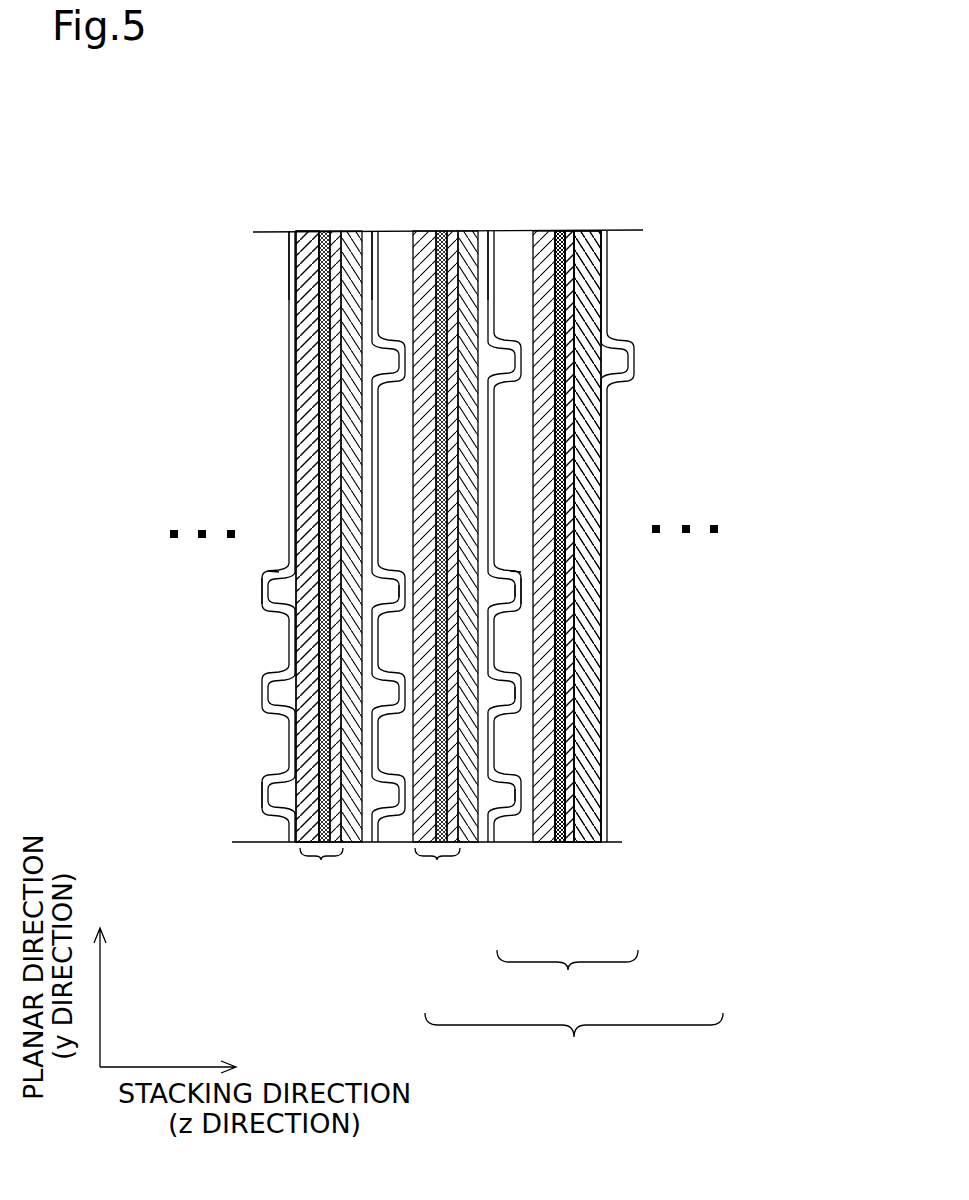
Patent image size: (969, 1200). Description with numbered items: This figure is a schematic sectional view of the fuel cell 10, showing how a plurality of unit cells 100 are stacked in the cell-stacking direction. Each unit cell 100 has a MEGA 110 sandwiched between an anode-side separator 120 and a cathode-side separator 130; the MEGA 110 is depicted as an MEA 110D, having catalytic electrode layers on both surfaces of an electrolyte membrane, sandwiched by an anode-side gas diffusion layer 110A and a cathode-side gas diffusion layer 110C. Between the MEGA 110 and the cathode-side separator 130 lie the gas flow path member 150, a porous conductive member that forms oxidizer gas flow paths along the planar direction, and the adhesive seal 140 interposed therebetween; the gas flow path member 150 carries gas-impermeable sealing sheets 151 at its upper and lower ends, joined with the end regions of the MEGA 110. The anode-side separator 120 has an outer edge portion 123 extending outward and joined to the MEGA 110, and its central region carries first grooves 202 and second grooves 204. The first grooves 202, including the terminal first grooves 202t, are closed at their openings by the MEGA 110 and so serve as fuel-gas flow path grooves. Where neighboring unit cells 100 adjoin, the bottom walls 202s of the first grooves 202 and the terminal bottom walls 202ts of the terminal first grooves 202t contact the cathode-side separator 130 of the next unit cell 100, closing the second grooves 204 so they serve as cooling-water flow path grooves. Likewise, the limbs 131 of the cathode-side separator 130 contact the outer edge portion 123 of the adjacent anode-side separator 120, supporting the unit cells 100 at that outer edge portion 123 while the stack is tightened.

The fuel cell 10 is at (189, 182).
The unit cell 100 is at (574, 1043).
The MEGA 110 is at (467, 618).
The anode-side gas diffusion layer 110A is at (542, 845).
The cathode-side gas diffusion layer 110C is at (575, 845).
The MEA 110D is at (558, 845).
The anode-side separator 120 is at (380, 842).
The outer edge portion 123 is at (408, 330).
The cathode-side separator 130 is at (290, 487).
The limbs 131 is at (289, 378).
The adhesive seal 140 is at (289, 325).
The gas flow path member 150 is at (562, 782).
The sealing sheets 151 is at (567, 462).
The first grooves 202 is at (380, 700).
The terminal first grooves 202t is at (288, 530).
The terminal bottom walls 202ts is at (296, 600).
The bottom walls 202s is at (257, 792).
The second grooves 204 is at (400, 636).